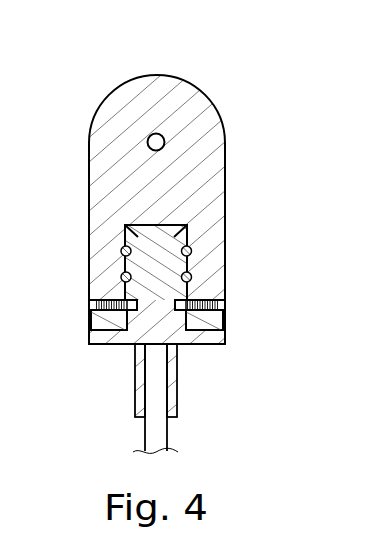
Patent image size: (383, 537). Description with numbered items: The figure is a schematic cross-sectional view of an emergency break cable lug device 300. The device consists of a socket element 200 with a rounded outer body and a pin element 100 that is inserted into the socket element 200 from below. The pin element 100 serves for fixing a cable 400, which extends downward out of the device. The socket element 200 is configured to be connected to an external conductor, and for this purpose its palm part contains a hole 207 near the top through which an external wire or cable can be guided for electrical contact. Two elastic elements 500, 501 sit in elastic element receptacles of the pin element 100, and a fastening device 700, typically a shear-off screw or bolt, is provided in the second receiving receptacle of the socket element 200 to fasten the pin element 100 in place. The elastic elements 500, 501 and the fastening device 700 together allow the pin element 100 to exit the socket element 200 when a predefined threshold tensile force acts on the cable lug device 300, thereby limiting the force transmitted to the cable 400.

The pin element 100 is at (208, 342).
The socket element 200 is at (225, 188).
The hole 207 is at (156, 133).
The cable lug device 300 is at (268, 130).
The cable 400 is at (142, 433).
The elastic element 500 is at (191, 250).
The elastic element 501 is at (191, 277).
The fastening device 700 is at (225, 303).